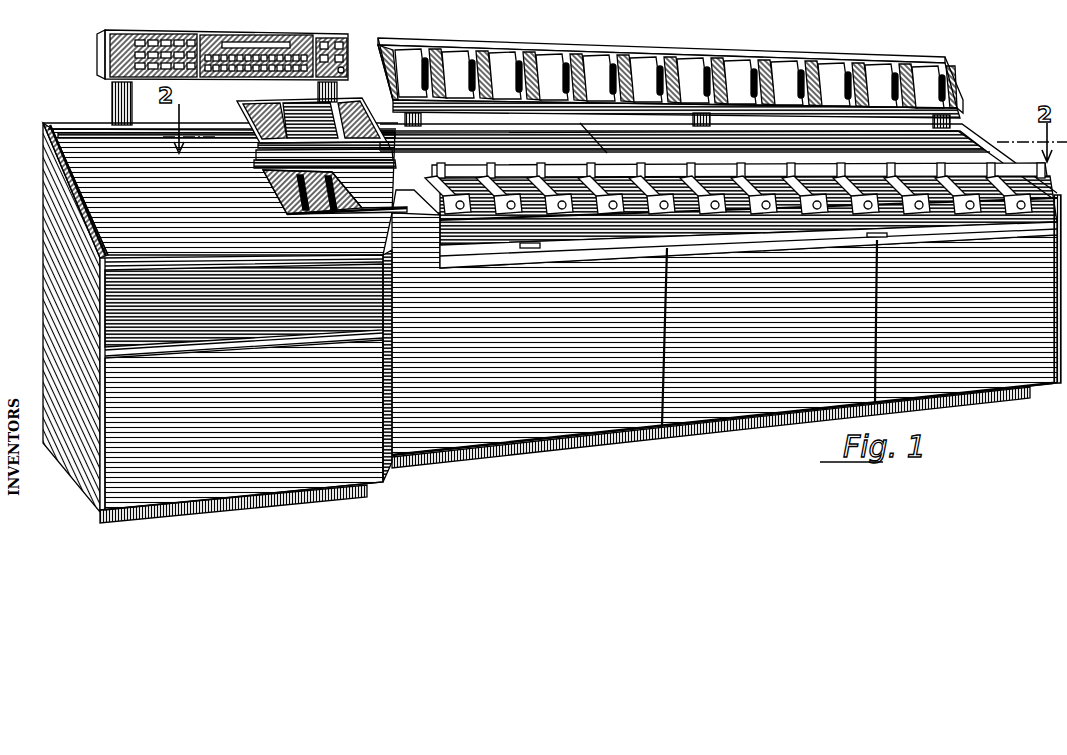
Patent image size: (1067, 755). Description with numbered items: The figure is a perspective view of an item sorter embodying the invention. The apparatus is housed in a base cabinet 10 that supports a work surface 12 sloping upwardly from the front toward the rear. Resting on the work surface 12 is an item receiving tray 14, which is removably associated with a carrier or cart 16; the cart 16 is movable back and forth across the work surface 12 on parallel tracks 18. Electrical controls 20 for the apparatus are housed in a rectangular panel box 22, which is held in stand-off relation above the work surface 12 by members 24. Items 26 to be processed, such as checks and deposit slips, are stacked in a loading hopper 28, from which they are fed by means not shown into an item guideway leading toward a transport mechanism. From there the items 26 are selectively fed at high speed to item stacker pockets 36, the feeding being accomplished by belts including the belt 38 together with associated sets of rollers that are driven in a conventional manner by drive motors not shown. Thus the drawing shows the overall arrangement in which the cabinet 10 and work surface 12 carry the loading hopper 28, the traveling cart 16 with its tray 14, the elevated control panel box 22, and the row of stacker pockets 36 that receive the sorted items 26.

The base cabinet 10 is at (722, 393).
The work surface 12 is at (78, 215).
The item receiving tray 14 is at (347, 110).
The carrier or cart 16 is at (238, 122).
The parallel tracks 18 is at (53, 152).
The electrical controls 20 is at (327, 37).
The rectangular panel box 22 is at (97, 56).
The members 24 is at (114, 101).
The items 26 is at (310, 203).
The loading hopper 28 is at (405, 205).
The item stacker pockets 36 is at (780, 167).
The belt 38 is at (157, 38).